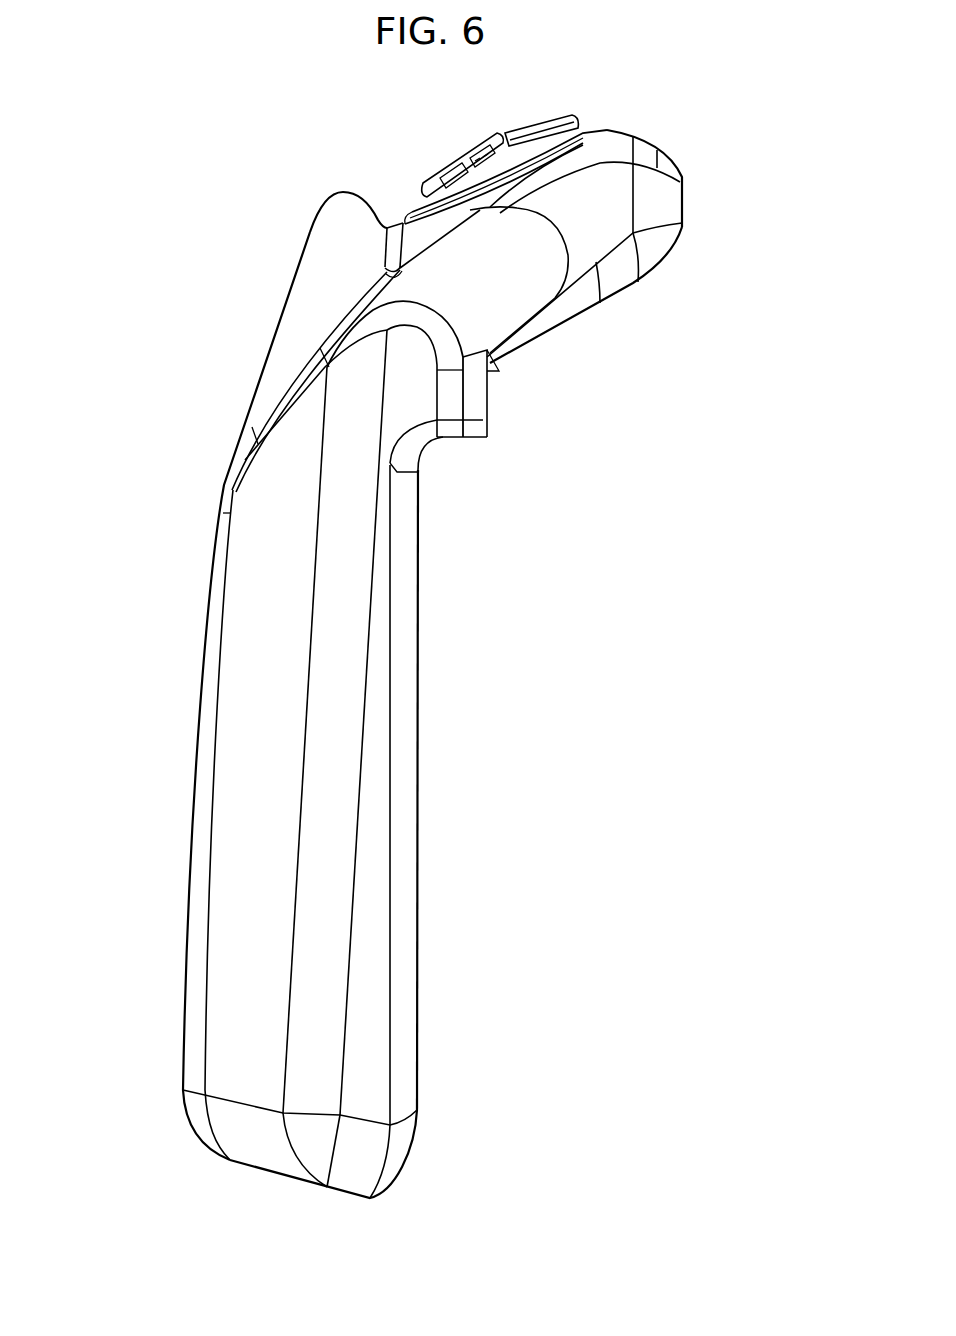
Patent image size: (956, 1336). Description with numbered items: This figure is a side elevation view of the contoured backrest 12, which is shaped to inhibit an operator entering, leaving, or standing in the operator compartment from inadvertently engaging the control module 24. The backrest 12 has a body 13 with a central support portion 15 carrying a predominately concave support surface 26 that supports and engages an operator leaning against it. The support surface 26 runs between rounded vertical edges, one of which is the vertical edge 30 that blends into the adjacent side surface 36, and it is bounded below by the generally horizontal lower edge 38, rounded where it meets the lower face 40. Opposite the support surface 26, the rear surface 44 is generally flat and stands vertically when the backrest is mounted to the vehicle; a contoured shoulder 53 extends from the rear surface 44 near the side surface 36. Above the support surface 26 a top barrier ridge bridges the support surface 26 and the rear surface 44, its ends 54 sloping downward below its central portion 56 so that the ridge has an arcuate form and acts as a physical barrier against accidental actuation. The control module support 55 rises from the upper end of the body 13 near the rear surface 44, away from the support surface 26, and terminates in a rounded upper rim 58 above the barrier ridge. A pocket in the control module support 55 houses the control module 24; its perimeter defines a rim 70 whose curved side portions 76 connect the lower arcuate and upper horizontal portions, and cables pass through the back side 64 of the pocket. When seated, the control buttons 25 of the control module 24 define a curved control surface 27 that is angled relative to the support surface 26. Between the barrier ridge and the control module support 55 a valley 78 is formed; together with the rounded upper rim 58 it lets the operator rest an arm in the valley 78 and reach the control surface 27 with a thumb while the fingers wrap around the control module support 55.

The backrest 12 is at (567, 751).
The body 13 is at (176, 1043).
The support portion 15 is at (178, 830).
The control module 24 is at (609, 132).
The control buttons 25 is at (497, 132).
The support surface 26 is at (207, 670).
The control surface 27 is at (541, 122).
The vertical edge 30 is at (200, 934).
The side surface 36 is at (270, 535).
The lower edge 38 is at (200, 1118).
The lower face 40 is at (258, 1145).
The rear surface 44 is at (420, 790).
The contoured shoulder 53 is at (487, 400).
The ends of the barrier ridge 54 is at (258, 407).
The control module support 55 is at (677, 160).
The central portion of the barrier ridge 56 is at (310, 238).
The rounded upper rim 58 is at (343, 192).
The back side of the pocket 64 is at (612, 294).
The rim 70 is at (434, 220).
The curved side portions 76 is at (490, 208).
The valley 78 is at (386, 236).